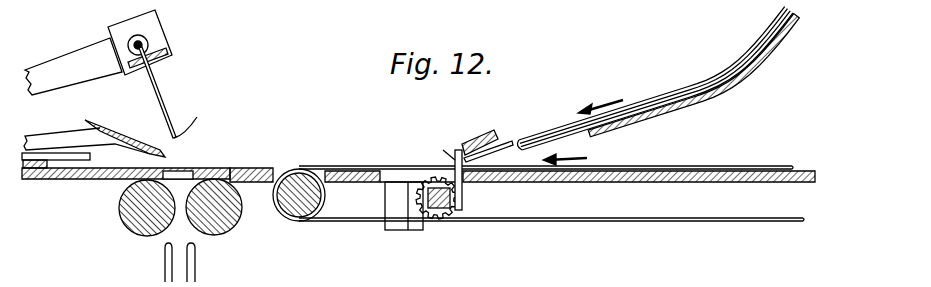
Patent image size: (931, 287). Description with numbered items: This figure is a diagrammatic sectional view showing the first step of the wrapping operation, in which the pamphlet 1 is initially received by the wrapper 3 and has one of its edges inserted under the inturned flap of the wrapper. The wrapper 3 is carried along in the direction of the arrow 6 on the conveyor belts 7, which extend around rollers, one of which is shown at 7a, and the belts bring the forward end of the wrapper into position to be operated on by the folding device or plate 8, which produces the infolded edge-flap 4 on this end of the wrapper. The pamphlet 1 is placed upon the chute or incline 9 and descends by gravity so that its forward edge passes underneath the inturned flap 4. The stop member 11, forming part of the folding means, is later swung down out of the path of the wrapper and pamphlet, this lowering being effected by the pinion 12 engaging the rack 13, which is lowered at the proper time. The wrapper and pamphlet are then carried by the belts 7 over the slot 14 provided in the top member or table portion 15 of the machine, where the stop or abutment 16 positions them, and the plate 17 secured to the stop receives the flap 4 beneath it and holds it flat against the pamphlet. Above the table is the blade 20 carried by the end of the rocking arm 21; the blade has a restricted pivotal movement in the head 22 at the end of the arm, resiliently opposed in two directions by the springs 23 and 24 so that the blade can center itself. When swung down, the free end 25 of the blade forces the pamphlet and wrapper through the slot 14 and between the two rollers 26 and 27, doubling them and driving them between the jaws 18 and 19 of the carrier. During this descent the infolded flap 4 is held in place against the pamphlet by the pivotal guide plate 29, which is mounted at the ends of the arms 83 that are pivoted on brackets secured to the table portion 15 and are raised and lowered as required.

The pamphlet 1 is at (654, 99).
The wrapper 3 is at (657, 167).
The infolded edge-flap 4 is at (506, 143).
The arrow 6 is at (586, 160).
The conveyor belts 7 is at (353, 220).
The roller 7a is at (306, 207).
The folding device or plate 8 is at (483, 131).
The chute or incline 9 is at (716, 93).
The stop member 11 is at (452, 160).
The pinion 12 is at (455, 213).
The rack 13 is at (417, 231).
The slot 14 is at (182, 168).
The top member or table portion 15 is at (246, 168).
The stop or abutment 16 is at (33, 168).
The plate 17 is at (80, 161).
The jaw 18 is at (165, 262).
The jaw 19 is at (196, 262).
The blade 20 is at (157, 87).
The rocking arm 21 is at (63, 63).
The head 22 is at (157, 28).
The spring 23 is at (148, 48).
The spring 24 is at (128, 67).
The free end 25 is at (208, 113).
The roller 26 is at (128, 225).
The roller 27 is at (233, 222).
The pivotal guide plate 29 is at (146, 119).
The arm 83 is at (60, 115).